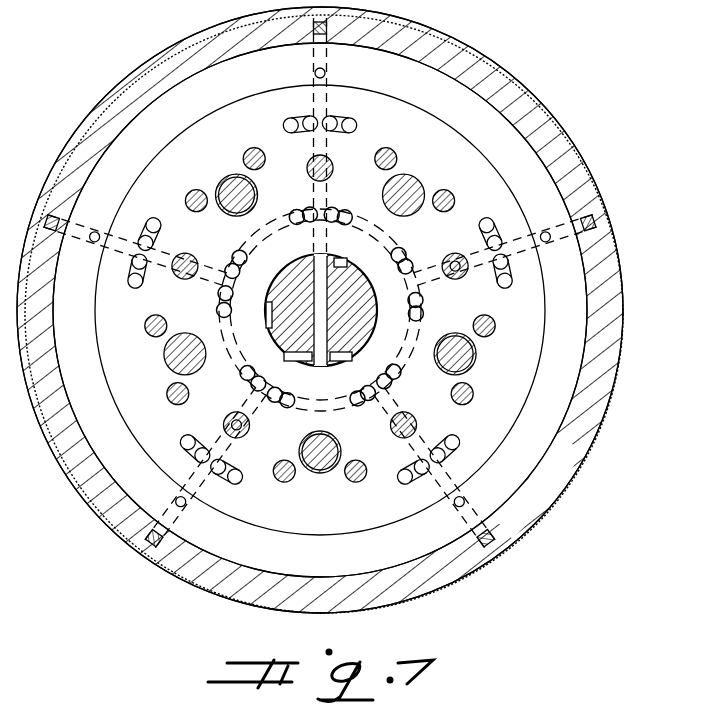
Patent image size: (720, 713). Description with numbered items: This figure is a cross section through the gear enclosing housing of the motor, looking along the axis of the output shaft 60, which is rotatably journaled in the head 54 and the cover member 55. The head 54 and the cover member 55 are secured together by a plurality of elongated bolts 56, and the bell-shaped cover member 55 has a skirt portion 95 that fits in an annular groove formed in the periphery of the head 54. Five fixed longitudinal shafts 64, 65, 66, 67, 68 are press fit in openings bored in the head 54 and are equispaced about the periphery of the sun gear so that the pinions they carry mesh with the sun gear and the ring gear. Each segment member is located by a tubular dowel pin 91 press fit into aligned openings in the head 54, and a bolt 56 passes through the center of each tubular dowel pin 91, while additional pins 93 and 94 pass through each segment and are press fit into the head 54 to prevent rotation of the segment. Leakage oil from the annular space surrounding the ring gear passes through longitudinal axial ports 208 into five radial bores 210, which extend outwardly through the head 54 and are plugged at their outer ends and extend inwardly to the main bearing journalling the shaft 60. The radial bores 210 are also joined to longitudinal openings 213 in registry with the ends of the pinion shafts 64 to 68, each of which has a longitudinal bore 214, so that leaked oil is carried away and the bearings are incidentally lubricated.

The head 54 is at (524, 178).
The cover member 55 is at (500, 95).
The elongated bolts 56 is at (232, 180).
The output shaft 60 is at (364, 356).
The fixed longitudinal shaft 64 is at (331, 164).
The fixed longitudinal shaft 65 is at (182, 279).
The fixed longitudinal shaft 66 is at (249, 430).
The fixed longitudinal shaft 67 is at (417, 424).
The fixed longitudinal shaft 68 is at (455, 253).
The tubular dowel pin 91 is at (412, 180).
The pin 93 is at (453, 197).
The pin 94 is at (394, 150).
The skirt portion 95 is at (608, 326).
The longitudinal axial ports 208 is at (326, 73).
The radial bores 210 is at (311, 64).
The longitudinal openings 213 is at (320, 254).
The longitudinal bore 214 is at (460, 280).